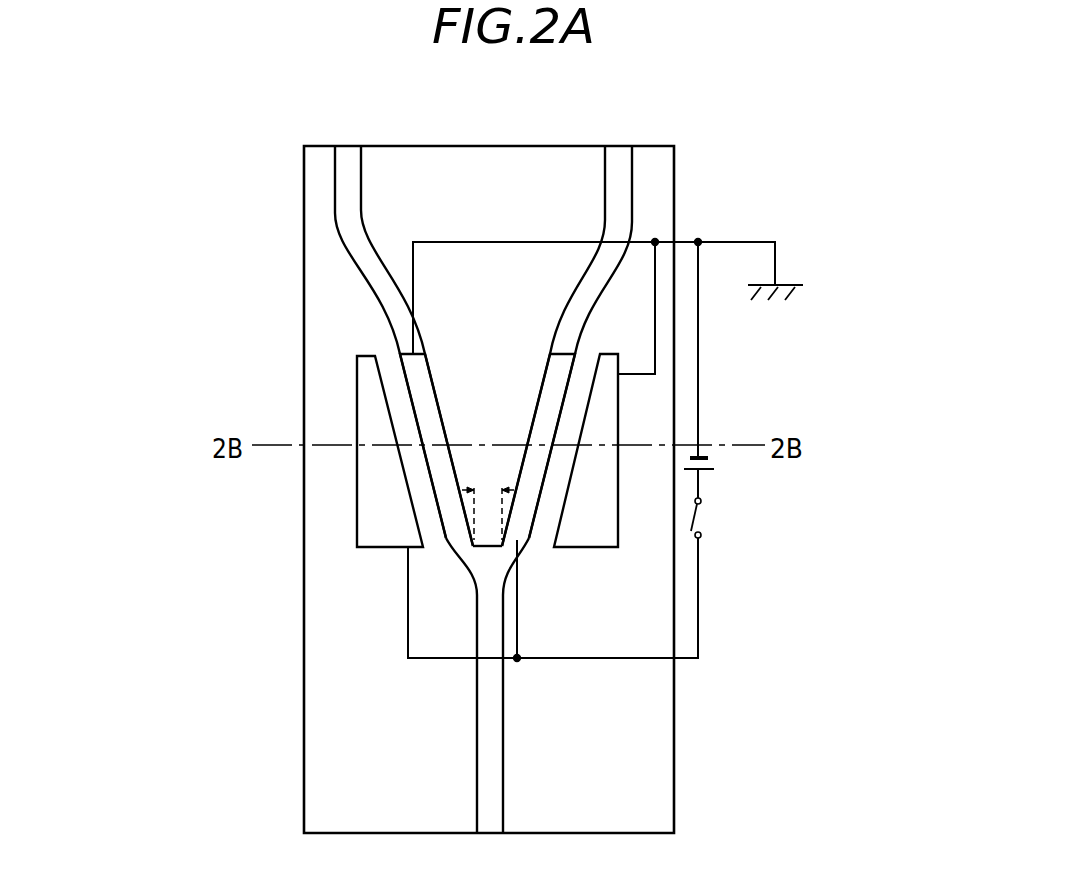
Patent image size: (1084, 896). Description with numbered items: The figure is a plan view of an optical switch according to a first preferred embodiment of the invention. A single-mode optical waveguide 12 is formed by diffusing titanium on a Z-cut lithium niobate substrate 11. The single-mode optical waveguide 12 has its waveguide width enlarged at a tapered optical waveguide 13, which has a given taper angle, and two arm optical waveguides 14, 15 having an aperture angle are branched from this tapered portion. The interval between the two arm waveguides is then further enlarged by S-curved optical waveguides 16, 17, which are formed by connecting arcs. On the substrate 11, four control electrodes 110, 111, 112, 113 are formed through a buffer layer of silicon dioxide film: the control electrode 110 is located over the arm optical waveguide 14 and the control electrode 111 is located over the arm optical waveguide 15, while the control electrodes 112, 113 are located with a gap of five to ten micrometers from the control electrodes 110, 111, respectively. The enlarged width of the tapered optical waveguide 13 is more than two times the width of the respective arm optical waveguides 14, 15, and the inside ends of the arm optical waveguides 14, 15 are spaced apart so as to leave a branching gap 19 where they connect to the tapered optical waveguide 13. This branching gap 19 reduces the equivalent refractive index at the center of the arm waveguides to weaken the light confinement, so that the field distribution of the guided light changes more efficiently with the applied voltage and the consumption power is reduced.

The substrate 11 is at (303, 230).
The single-mode optical waveguide 12 is at (476, 775).
The tapered optical waveguide 13 is at (483, 578).
The arm optical waveguide 14 is at (540, 513).
The arm optical waveguide 15 is at (430, 502).
The S-curved optical waveguide 16 is at (617, 263).
The S-curved optical waveguide 17 is at (347, 255).
The branching gap 19 is at (488, 496).
The control electrode 110 is at (543, 473).
The control electrode 111 is at (428, 427).
The control electrode 112 is at (612, 466).
The control electrode 113 is at (365, 383).